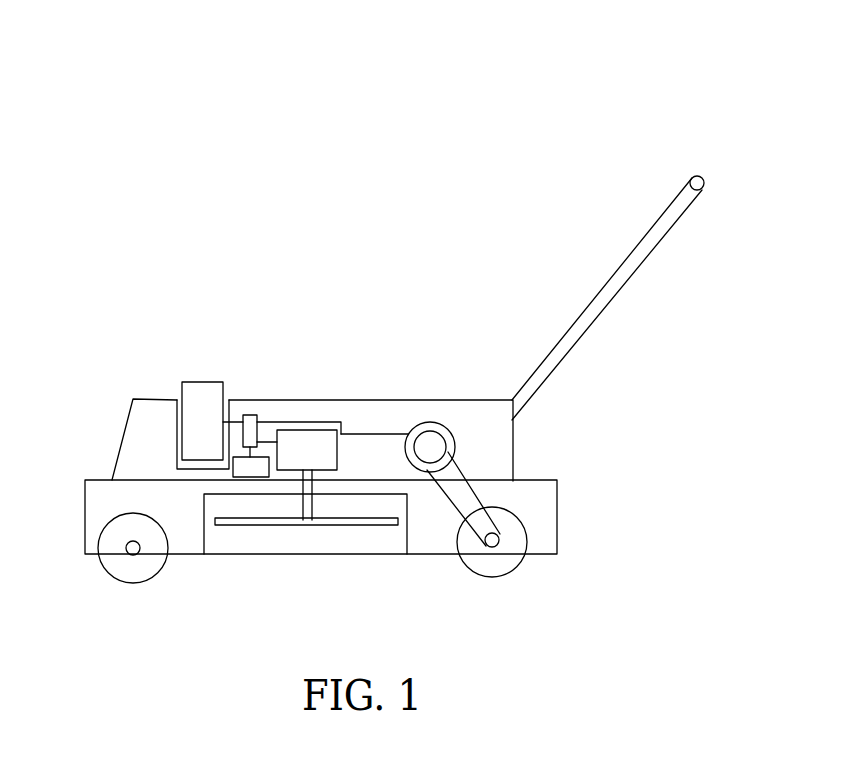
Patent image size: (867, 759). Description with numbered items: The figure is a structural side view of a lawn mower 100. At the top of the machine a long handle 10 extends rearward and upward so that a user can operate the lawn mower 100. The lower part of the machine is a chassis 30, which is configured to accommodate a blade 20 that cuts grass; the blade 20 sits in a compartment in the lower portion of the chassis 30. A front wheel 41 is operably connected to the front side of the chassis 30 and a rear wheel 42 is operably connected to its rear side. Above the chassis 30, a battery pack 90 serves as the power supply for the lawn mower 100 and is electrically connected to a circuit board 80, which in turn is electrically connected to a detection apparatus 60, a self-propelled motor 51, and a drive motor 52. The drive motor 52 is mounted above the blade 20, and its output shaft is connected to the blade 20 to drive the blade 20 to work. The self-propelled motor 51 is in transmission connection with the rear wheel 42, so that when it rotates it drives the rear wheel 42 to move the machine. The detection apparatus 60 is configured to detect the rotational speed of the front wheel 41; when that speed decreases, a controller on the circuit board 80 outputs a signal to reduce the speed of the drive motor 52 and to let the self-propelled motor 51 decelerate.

The lawn mower 100 is at (418, 107).
The handle 10 is at (643, 270).
The blade 20 is at (352, 530).
The chassis 30 is at (558, 514).
The front wheel 41 is at (116, 581).
The rear wheel 42 is at (517, 577).
The self-propelled motor 51 is at (445, 430).
The drive motor 52 is at (312, 426).
The detection apparatus 60 is at (250, 467).
The circuit board 80 is at (257, 410).
The battery pack 90 is at (203, 378).